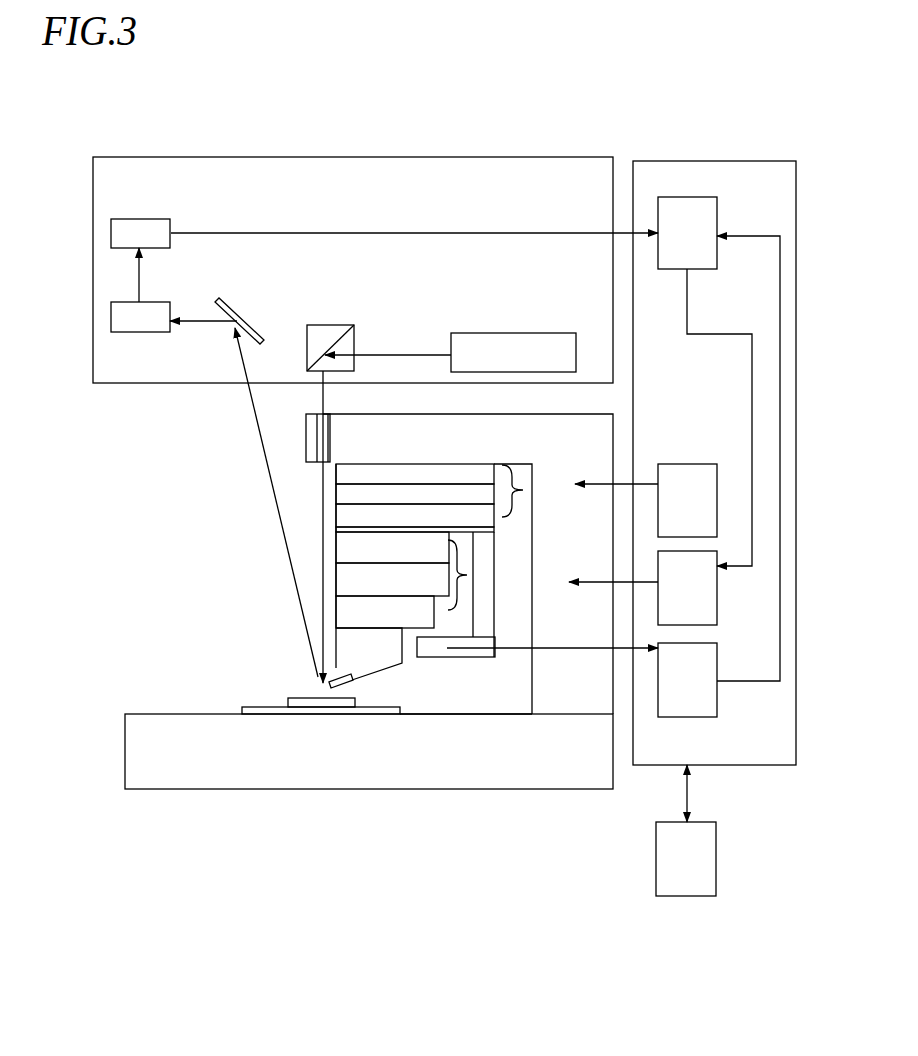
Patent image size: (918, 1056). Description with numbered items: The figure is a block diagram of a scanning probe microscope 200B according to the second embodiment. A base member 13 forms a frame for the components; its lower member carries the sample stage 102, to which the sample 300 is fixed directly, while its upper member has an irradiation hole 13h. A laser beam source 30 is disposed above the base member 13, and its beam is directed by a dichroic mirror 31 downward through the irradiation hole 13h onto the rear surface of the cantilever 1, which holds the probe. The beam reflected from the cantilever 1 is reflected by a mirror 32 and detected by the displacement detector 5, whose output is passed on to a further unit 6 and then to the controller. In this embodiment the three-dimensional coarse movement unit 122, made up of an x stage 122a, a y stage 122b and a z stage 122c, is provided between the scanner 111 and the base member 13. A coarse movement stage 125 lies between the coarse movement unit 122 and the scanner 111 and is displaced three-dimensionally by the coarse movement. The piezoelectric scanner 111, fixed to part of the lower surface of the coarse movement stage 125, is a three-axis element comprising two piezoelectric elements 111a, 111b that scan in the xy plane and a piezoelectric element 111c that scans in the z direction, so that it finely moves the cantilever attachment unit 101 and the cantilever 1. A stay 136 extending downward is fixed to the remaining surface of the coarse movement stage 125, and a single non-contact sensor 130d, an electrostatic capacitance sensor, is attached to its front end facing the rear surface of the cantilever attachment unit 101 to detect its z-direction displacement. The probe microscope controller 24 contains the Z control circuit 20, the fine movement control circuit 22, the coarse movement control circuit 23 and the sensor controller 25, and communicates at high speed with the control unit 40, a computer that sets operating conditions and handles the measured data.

The scanning probe microscope 200B is at (674, 113).
The probe microscope controller 24 is at (760, 161).
The Z control circuit 20 is at (717, 207).
The coarse movement control circuit 23 is at (672, 464).
The fine movement control circuit 22 is at (717, 607).
The sensor controller 25 is at (717, 660).
The control unit 40 is at (716, 845).
The signal processor 6 is at (171, 223).
The displacement detector 5 is at (171, 308).
The mirror 32 is at (250, 320).
The dichroic mirror 31 is at (354, 337).
The laser beam source 30 is at (493, 332).
The irradiation hole 13h is at (325, 414).
The x stage 122a is at (340, 474).
The y stage 122b is at (340, 495).
The z stage 122c is at (340, 518).
The three-dimensional coarse movement unit 122 is at (534, 491).
The coarse movement stage 125 is at (500, 530).
The piezoelectric element 111a is at (340, 551).
The piezoelectric element 111b is at (340, 580).
The piezoelectric element 111c is at (340, 607).
The piezoelectric scanner 111 is at (467, 575).
The non-contact sensor 130d is at (440, 650).
The stay 136 is at (485, 655).
The cantilever attachment unit 101 is at (348, 652).
The cantilever 1 is at (338, 687).
The sample 300 is at (287, 697).
The sample stage 102 is at (252, 707).
The base member 13 is at (452, 790).